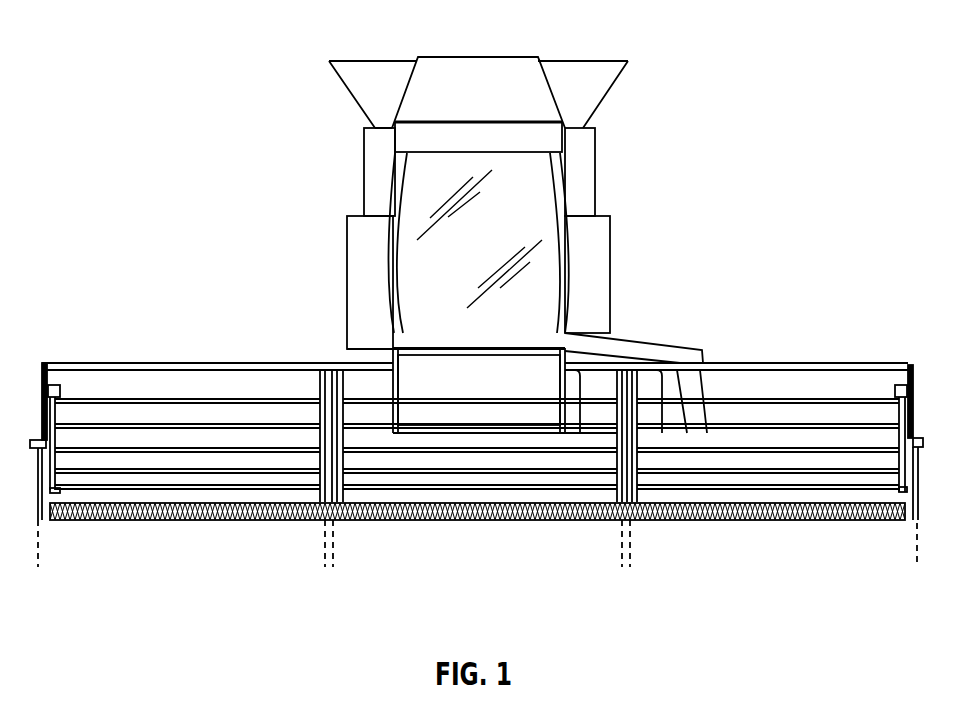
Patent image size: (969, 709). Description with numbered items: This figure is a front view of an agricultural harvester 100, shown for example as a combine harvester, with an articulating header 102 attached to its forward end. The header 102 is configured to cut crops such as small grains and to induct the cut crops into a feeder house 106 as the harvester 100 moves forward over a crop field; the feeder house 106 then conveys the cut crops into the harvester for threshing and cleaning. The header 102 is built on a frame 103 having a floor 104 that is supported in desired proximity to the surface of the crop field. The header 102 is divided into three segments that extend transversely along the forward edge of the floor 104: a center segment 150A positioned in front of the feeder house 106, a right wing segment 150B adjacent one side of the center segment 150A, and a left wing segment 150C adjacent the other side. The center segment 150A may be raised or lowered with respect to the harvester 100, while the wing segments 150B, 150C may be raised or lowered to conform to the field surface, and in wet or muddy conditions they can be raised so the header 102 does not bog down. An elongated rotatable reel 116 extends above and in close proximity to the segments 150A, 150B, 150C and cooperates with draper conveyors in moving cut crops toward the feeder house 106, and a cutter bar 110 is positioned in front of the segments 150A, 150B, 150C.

The agricultural harvester 100 is at (246, 201).
The header 102 is at (100, 353).
The frame 103 is at (862, 363).
The floor 104 is at (160, 503).
The feeder house 106 is at (524, 367).
The cutter bar 110 is at (500, 513).
The rotatable reel 116 is at (823, 467).
The center segment 150A is at (622, 567).
The right wing segment 150B is at (325, 567).
The left wing segment 150C is at (917, 567).